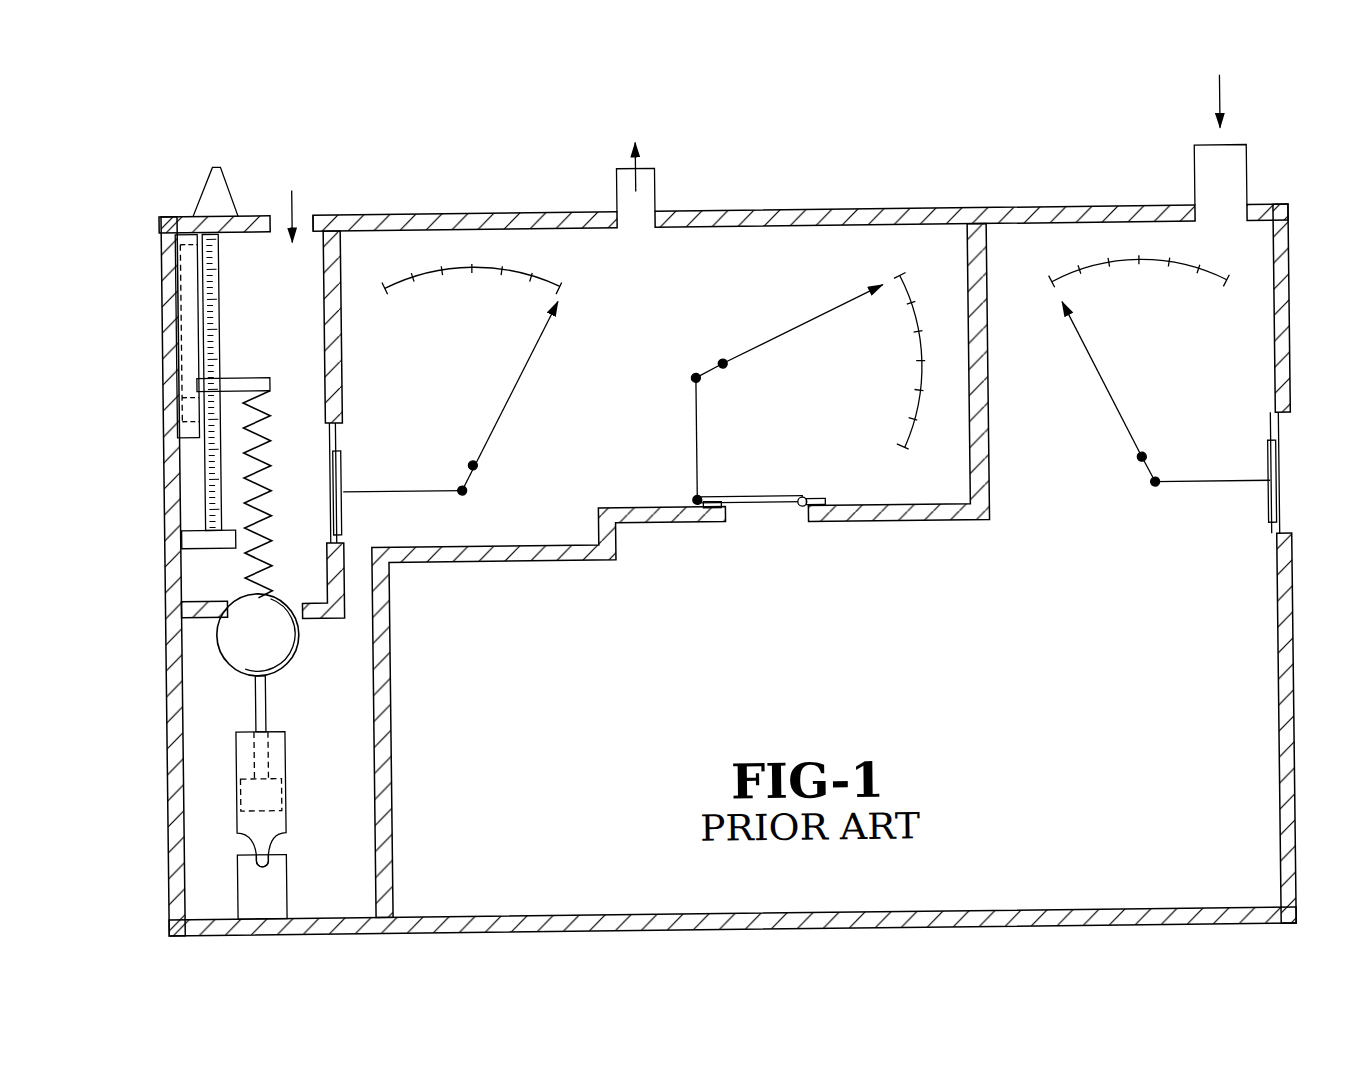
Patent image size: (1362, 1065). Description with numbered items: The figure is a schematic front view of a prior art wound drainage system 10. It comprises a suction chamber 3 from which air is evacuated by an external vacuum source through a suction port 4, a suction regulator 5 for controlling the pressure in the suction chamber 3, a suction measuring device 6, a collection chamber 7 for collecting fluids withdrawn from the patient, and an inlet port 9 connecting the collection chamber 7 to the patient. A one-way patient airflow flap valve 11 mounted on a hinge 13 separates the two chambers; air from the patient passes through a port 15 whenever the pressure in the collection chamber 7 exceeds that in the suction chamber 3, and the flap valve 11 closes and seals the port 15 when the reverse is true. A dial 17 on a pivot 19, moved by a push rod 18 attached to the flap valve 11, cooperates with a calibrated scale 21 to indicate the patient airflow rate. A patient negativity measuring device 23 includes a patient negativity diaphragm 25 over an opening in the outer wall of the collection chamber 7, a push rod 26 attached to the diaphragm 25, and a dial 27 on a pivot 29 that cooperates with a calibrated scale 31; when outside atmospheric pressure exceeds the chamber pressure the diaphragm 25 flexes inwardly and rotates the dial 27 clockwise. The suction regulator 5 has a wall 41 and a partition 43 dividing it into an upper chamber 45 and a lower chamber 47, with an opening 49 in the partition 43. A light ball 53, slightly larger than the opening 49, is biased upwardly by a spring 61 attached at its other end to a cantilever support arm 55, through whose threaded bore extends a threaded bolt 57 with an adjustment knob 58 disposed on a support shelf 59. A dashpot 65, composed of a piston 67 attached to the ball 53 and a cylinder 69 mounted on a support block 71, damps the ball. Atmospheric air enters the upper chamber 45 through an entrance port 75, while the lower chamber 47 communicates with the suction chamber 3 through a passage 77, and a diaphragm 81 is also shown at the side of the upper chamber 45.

The suction chamber 3 is at (634, 359).
The suction port 4 is at (656, 190).
The suction regulator 5 is at (280, 186).
The suction measuring device 6 is at (520, 426).
The collection chamber 7 is at (912, 671).
The inlet port 9 is at (1249, 181).
The wound drainage system 10 is at (842, 184).
The patient airflow flap valve 11 is at (742, 503).
The hinge 13 is at (804, 504).
The port 15 is at (751, 528).
The dial 17 is at (778, 339).
The push rod 18 is at (694, 434).
The pivot 19 is at (711, 361).
The calibrated scale 21 is at (914, 319).
The patient negativity measuring device 23 is at (1074, 402).
The patient negativity diaphragm 25 is at (1277, 471).
The push rod 26 is at (1206, 495).
The dial 27 is at (1118, 422).
The pivot 29 is at (1137, 474).
The calibrated scale 31 is at (1097, 273).
The wall 41 is at (160, 407).
The partition 43 is at (208, 604).
The upper chamber 45 is at (306, 451).
The lower chamber 47 is at (337, 708).
The opening 49 is at (219, 618).
The light ball 53 is at (232, 679).
The cantilever support arm 55 is at (235, 379).
The threaded bolt 57 is at (203, 310).
The adjustment knob 58 is at (203, 193).
The support shelf 59 is at (253, 218).
The spring 61 is at (255, 460).
The dashpot 65 is at (277, 787).
The piston 67 is at (264, 803).
The cylinder 69 is at (233, 798).
The support block 71 is at (279, 889).
The entrance port 75 is at (300, 225).
The passage 77 is at (353, 590).
The regulator diaphragm 81 is at (340, 442).